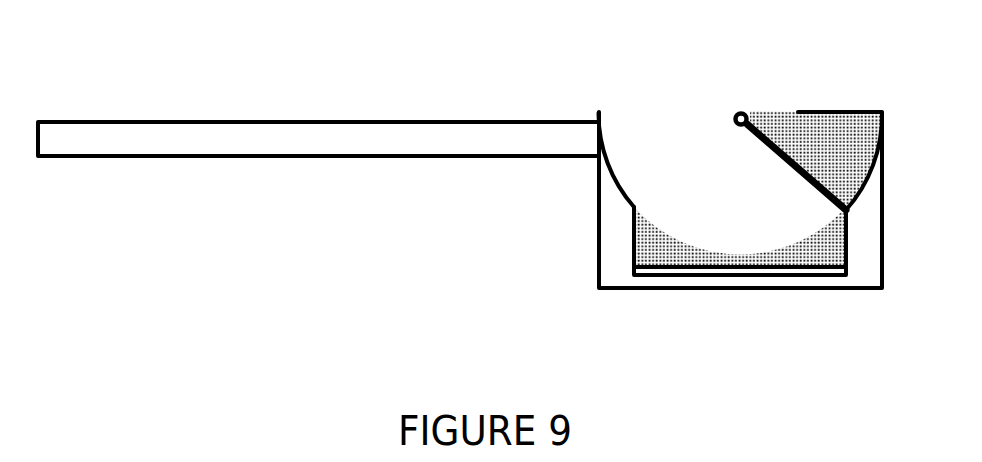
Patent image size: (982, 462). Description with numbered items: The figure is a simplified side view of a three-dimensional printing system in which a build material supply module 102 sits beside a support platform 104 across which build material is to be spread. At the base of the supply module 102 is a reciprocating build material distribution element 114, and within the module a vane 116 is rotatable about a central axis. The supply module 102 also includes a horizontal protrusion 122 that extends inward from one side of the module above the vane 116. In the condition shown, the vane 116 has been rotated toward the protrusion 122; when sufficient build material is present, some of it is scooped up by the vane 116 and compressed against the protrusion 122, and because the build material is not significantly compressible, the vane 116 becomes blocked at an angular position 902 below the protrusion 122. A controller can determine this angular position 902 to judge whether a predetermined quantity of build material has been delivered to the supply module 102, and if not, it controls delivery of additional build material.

The supply module 102 is at (602, 332).
The support platform 104 is at (130, 122).
The build material distribution element 114 is at (705, 272).
The vane 116 is at (810, 181).
The horizontal protrusion 122 is at (845, 108).
The angular position 902 is at (810, 140).